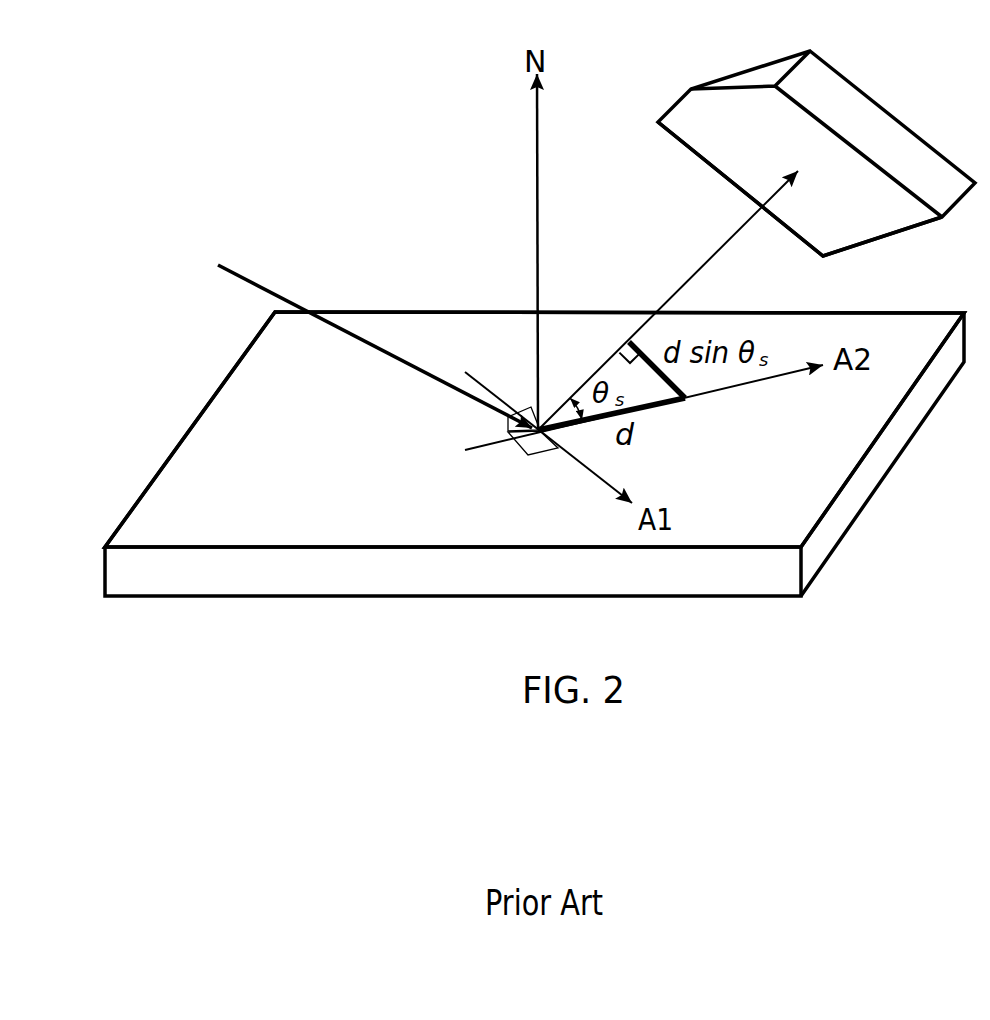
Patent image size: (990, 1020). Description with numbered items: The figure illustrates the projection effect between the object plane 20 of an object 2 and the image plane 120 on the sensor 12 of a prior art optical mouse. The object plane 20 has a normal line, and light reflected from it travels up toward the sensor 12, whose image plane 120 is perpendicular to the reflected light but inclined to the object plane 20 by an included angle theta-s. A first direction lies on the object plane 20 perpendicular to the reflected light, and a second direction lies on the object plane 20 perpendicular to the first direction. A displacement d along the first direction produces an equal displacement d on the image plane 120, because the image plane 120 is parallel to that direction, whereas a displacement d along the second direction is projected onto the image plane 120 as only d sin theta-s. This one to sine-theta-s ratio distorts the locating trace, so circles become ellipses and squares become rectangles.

The object 2 is at (840, 517).
The object plane 20 is at (213, 440).
The sensor 12 is at (878, 100).
The image plane 120 is at (847, 215).